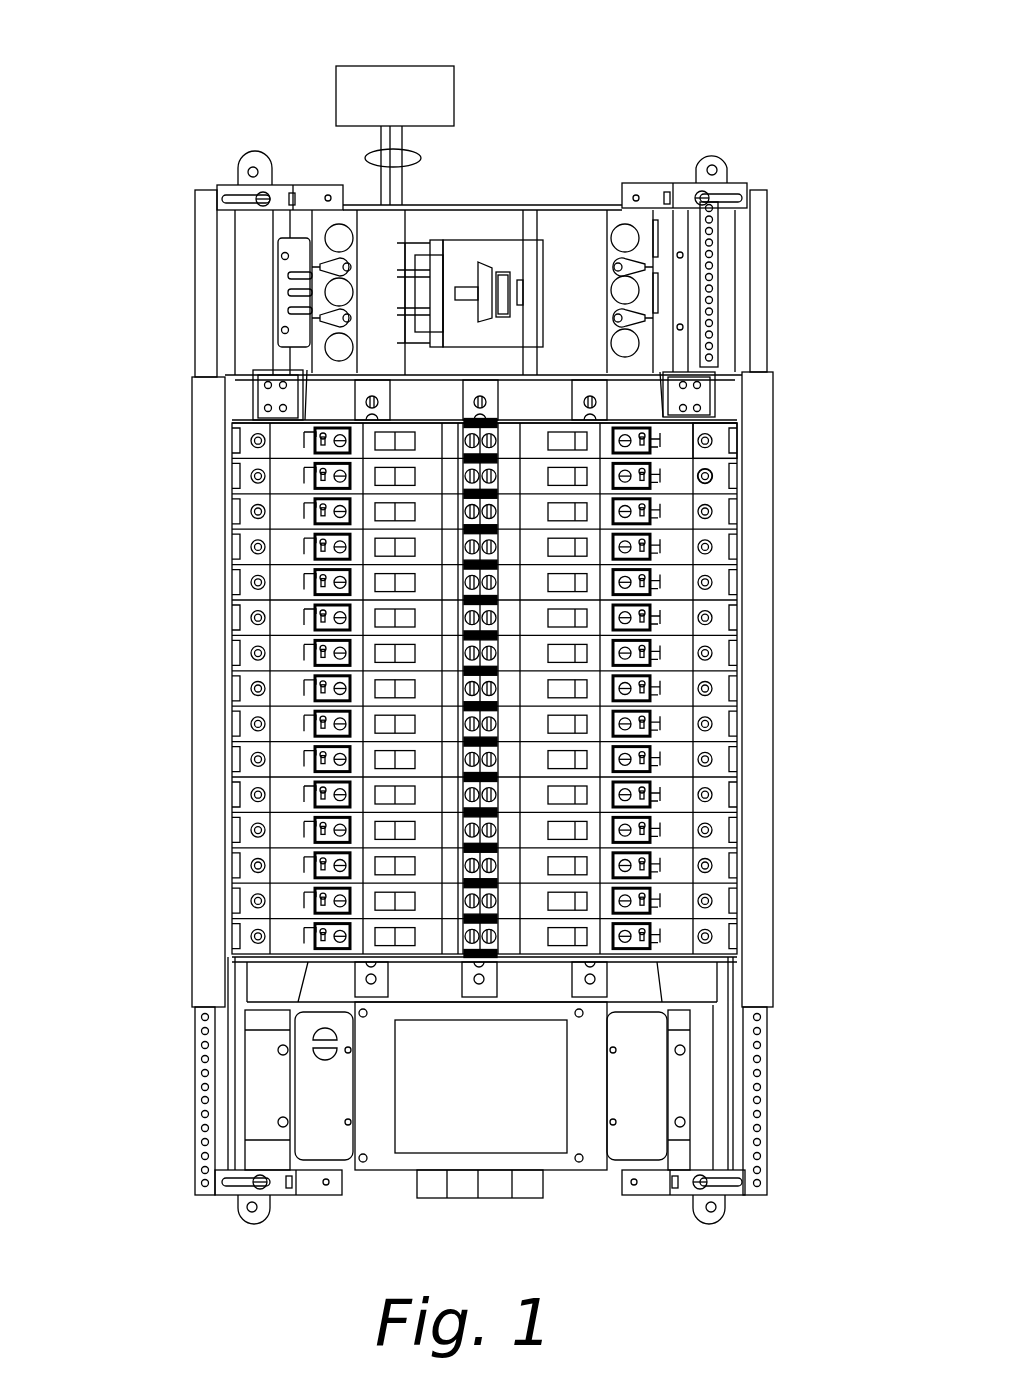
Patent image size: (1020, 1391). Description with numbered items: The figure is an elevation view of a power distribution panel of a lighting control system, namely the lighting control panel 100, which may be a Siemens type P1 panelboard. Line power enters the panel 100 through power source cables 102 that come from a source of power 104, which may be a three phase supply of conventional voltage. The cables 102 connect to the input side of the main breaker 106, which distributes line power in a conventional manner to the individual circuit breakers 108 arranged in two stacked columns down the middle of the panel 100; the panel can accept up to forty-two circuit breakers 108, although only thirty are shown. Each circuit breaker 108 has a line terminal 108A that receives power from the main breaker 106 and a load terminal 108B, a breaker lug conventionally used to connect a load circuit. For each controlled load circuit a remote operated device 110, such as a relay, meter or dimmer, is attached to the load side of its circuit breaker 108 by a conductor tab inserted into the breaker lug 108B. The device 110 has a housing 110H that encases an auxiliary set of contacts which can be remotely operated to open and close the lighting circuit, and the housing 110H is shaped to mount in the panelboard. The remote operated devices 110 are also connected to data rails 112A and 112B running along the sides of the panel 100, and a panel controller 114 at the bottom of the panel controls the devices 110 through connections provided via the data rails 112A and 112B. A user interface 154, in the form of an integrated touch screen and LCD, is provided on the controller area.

The lighting control panel 100 is at (640, 114).
The power source cables 102 is at (421, 158).
The source of power 104 is at (455, 82).
The main breaker 106 is at (483, 250).
The individual circuit breakers 108 is at (596, 412).
The line terminal 108A is at (498, 448).
The load terminal 108B is at (621, 432).
The remote operated device 110 is at (690, 440).
The housing 110H is at (668, 448).
The data rail 112A is at (750, 872).
The data rail 112B is at (205, 890).
The panel controller 114 is at (558, 1160).
The user interface 154 is at (420, 1130).